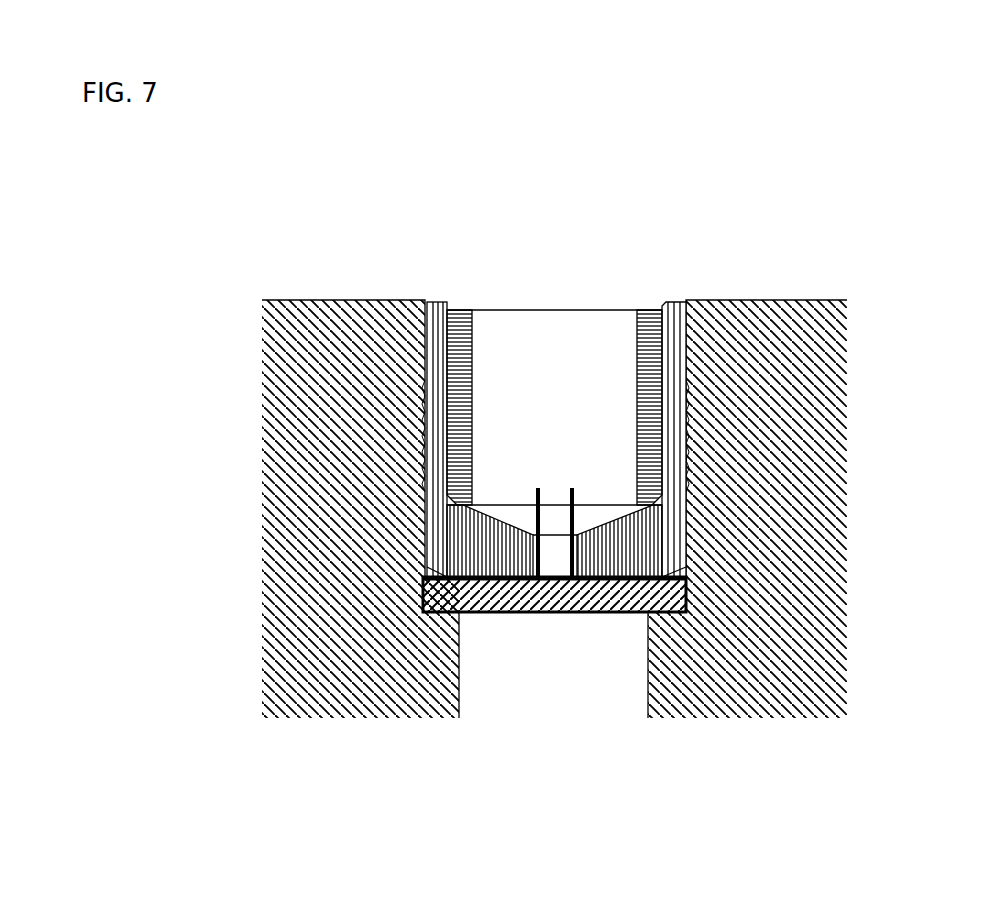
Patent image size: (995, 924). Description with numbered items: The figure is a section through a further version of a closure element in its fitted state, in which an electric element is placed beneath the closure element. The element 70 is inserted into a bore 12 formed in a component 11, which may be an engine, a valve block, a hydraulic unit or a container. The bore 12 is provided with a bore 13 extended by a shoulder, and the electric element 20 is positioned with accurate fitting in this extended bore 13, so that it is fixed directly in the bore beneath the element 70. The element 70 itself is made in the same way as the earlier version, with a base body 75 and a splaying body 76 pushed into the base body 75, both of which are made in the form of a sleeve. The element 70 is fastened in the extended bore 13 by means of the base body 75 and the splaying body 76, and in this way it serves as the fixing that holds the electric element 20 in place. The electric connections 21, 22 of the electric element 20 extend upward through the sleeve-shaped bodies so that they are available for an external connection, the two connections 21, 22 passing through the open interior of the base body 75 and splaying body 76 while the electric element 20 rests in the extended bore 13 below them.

The component 11 is at (322, 625).
The bore 12 is at (645, 657).
The extended bore 13 is at (687, 600).
The electric element 20 is at (550, 590).
The electric connection 21 is at (538, 487).
The electric connection 22 is at (572, 487).
The element 70 is at (431, 479).
The base body 75 is at (437, 345).
The splaying body 76 is at (462, 320).